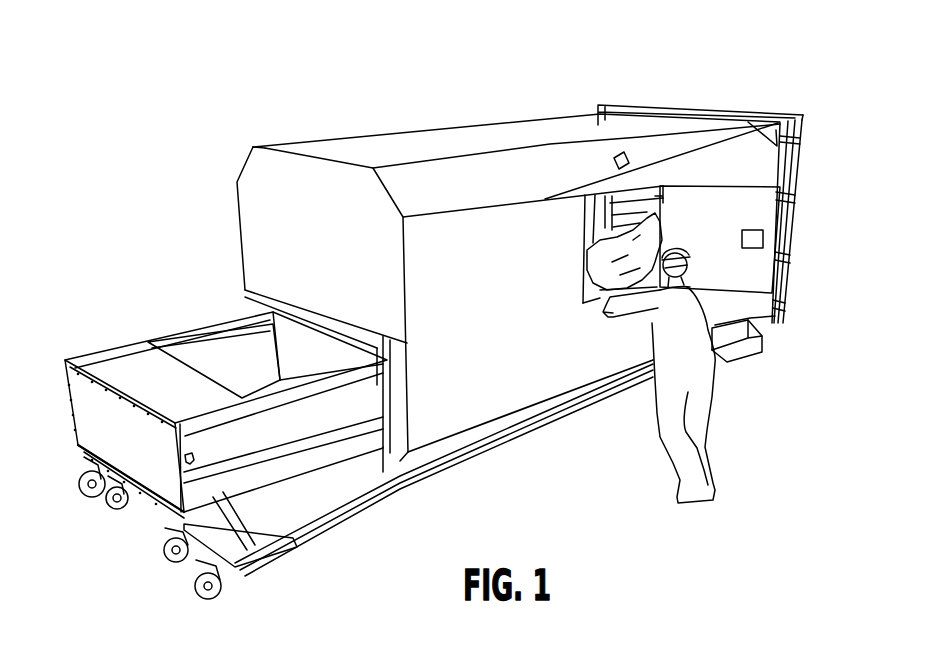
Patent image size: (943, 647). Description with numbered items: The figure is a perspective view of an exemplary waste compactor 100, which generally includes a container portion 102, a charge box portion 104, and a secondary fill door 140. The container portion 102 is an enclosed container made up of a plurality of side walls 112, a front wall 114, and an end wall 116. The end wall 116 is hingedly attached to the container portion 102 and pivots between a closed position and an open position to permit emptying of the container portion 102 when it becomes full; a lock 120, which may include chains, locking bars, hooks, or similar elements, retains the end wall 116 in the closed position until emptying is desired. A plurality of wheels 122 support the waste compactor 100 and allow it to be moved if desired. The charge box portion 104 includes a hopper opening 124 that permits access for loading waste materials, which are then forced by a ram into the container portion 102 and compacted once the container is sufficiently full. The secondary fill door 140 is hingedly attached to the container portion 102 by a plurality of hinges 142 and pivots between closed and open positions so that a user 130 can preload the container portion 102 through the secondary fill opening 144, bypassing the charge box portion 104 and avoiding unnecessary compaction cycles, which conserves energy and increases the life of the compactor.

The waste compactor 100 is at (493, 52).
The container portion 102 is at (558, 112).
The charge box portion 104 is at (306, 498).
The side walls 112 is at (387, 150).
The front wall 114 is at (257, 210).
The end wall 116 is at (800, 165).
The lock 120 is at (758, 327).
The wheels 122 is at (85, 487).
The hopper opening 124 is at (220, 353).
The user 130 is at (693, 373).
The secondary fill door 140 is at (717, 213).
The hinges 142 is at (672, 203).
The secondary fill opening 144 is at (630, 207).